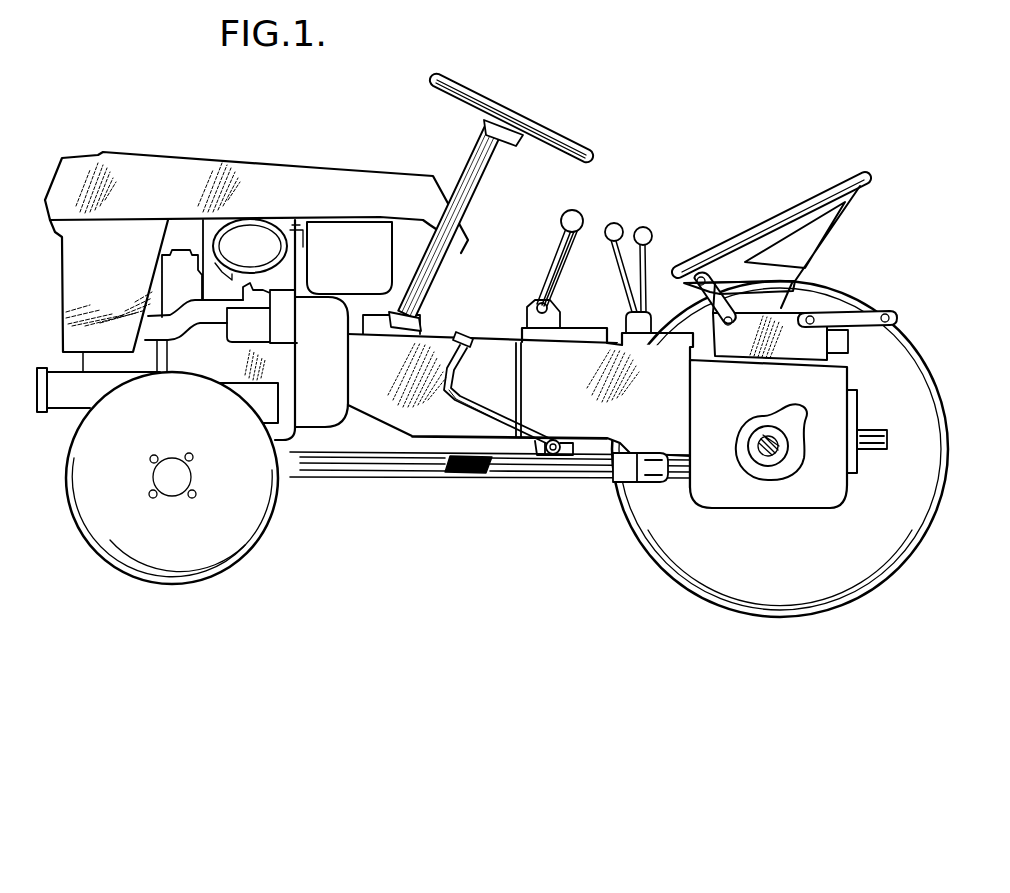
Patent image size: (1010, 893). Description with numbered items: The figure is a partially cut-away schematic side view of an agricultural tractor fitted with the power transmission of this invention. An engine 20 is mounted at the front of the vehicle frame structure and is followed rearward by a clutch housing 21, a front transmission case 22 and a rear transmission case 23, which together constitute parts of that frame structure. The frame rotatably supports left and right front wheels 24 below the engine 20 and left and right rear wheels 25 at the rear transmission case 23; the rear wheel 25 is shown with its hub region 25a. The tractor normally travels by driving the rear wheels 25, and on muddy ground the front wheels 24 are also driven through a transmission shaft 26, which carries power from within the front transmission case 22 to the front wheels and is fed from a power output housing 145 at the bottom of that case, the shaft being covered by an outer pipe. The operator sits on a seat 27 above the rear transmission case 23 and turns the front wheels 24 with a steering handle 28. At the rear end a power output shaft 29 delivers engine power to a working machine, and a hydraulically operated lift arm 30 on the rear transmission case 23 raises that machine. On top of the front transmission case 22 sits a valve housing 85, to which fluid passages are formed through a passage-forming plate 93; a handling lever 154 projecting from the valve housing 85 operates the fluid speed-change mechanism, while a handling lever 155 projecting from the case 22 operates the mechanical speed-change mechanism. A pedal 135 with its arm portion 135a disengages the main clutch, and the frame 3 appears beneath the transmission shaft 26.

The frame 3 is at (518, 442).
The engine 20 is at (247, 237).
The clutch housing 21 is at (380, 390).
The front transmission case 22 is at (680, 432).
The rear transmission case 23 is at (820, 390).
The front wheels 24 is at (217, 538).
The rear wheels 25 is at (790, 590).
The rear wheel hub 25a is at (787, 453).
The transmission shaft 26 is at (467, 477).
The seat 27 is at (750, 228).
The steering handle 28 is at (556, 142).
The power output shaft 29 is at (873, 450).
The lift arm 30 is at (862, 318).
The valve housing 85 is at (525, 325).
The passage-forming plate 93 is at (515, 377).
The pedal 135 is at (466, 336).
The arm portion 135a is at (455, 400).
The power output housing 145 is at (612, 475).
The handling lever 154 is at (582, 210).
The handling lever 155 is at (614, 223).